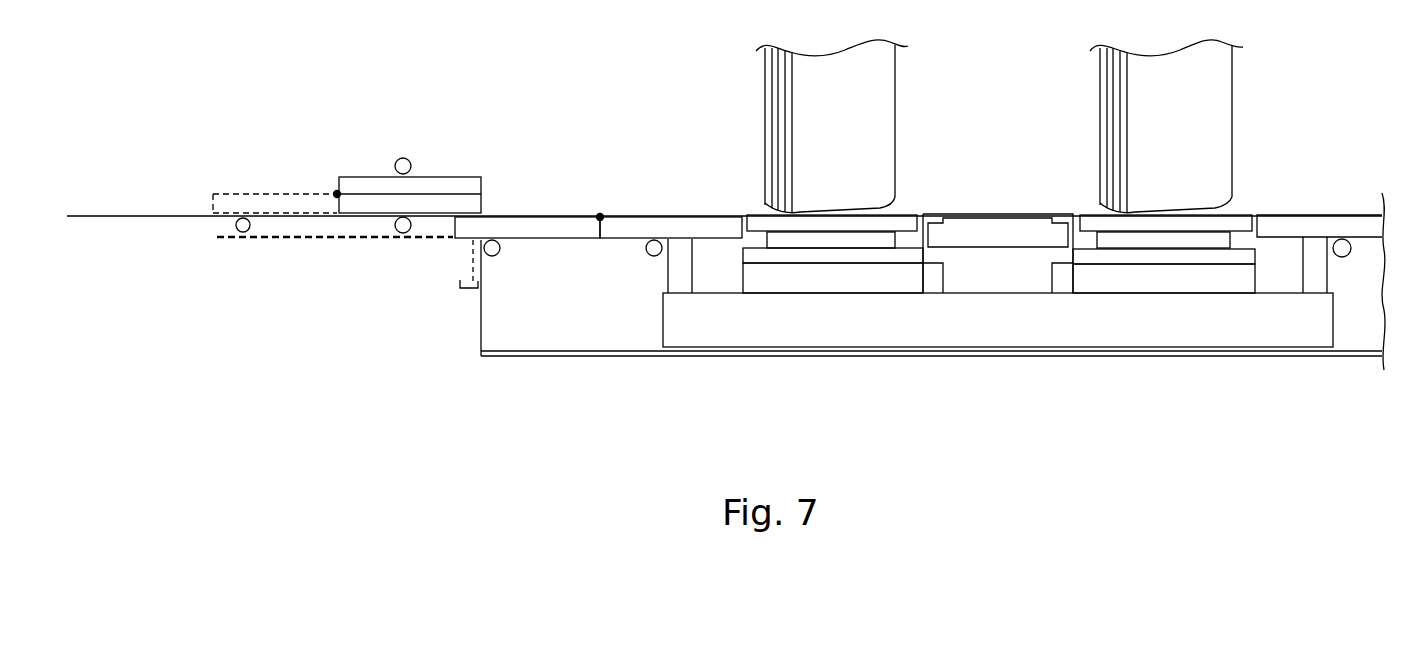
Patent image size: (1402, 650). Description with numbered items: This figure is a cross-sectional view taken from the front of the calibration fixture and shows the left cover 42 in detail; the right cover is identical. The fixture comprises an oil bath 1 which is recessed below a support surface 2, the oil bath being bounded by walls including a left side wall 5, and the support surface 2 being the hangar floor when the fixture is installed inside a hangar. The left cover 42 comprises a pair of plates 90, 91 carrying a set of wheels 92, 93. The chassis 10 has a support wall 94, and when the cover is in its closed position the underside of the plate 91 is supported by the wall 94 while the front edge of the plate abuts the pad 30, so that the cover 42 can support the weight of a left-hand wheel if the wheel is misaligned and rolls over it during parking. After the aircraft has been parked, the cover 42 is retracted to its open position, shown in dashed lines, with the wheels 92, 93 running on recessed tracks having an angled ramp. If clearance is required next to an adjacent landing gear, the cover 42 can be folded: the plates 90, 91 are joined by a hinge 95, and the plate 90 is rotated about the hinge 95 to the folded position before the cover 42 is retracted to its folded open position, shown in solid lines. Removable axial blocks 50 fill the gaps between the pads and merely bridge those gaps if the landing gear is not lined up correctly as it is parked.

The oil bath 1 is at (510, 337).
The support surface 2 is at (127, 216).
The left side wall 5 is at (483, 268).
The chassis 10 is at (663, 325).
The pad 30 is at (842, 233).
The left cover 42 is at (564, 138).
The axial block 50 is at (950, 213).
The plate 90 is at (463, 177).
The plate 91 is at (367, 217).
The wheel 92 is at (410, 161).
The wheel 93 is at (400, 233).
The support wall 94 is at (693, 268).
The hinge 95 is at (337, 194).